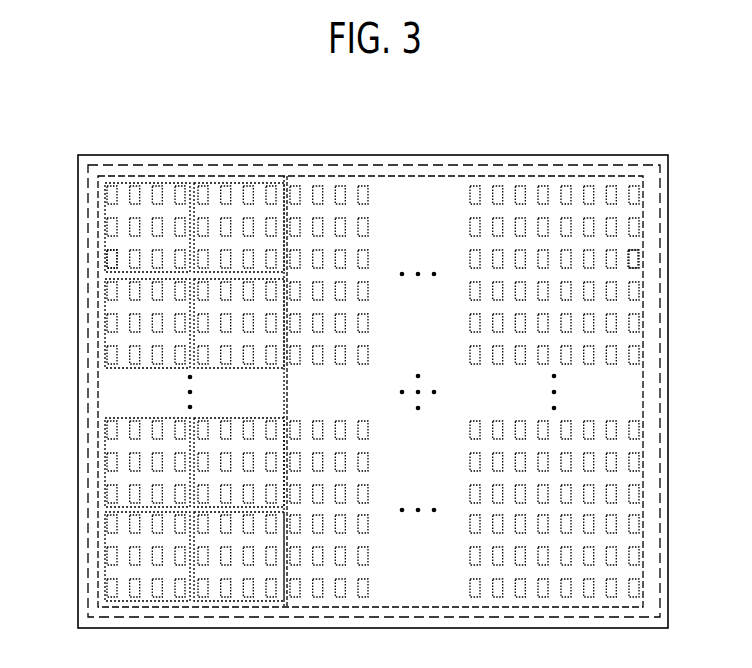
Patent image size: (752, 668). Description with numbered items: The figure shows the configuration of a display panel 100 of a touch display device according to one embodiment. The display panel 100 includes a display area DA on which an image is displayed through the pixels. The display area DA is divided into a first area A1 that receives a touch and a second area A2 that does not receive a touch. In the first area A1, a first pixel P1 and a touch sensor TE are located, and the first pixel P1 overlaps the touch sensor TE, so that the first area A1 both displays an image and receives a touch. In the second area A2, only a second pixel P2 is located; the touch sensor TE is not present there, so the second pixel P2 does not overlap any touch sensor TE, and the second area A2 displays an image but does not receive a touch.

The display panel 100 is at (50, 123).
The display area DA is at (88, 193).
The touch sensor TE is at (98, 227).
The first area A1 is at (190, 178).
The second area A2 is at (421, 175).
The first pixel P1 is at (107, 262).
The second pixel P2 is at (640, 258).